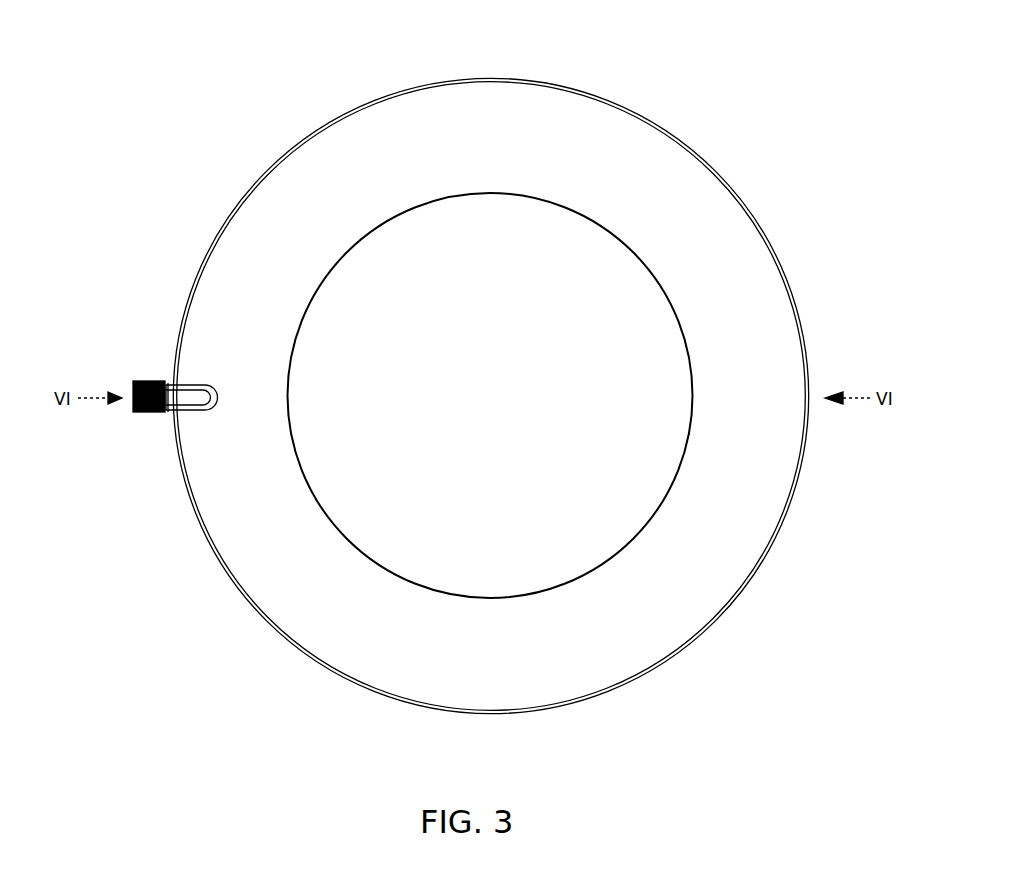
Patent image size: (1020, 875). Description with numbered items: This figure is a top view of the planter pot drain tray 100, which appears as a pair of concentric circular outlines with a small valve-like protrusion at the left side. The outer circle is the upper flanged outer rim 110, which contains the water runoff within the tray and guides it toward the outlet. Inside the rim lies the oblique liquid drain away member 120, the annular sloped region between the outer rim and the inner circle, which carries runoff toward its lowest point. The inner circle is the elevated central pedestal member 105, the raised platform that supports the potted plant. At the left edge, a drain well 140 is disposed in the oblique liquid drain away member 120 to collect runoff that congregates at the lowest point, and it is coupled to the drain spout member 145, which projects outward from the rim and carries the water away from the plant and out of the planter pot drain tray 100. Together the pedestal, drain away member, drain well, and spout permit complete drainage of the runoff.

The planter pot drain tray 100 is at (248, 96).
The elevated central pedestal member 105 is at (535, 253).
The upper flanged outer rim 110 is at (480, 78).
The oblique liquid drain away member 120 is at (696, 222).
The drain well 140 is at (187, 395).
The drain spout member 145 is at (145, 410).